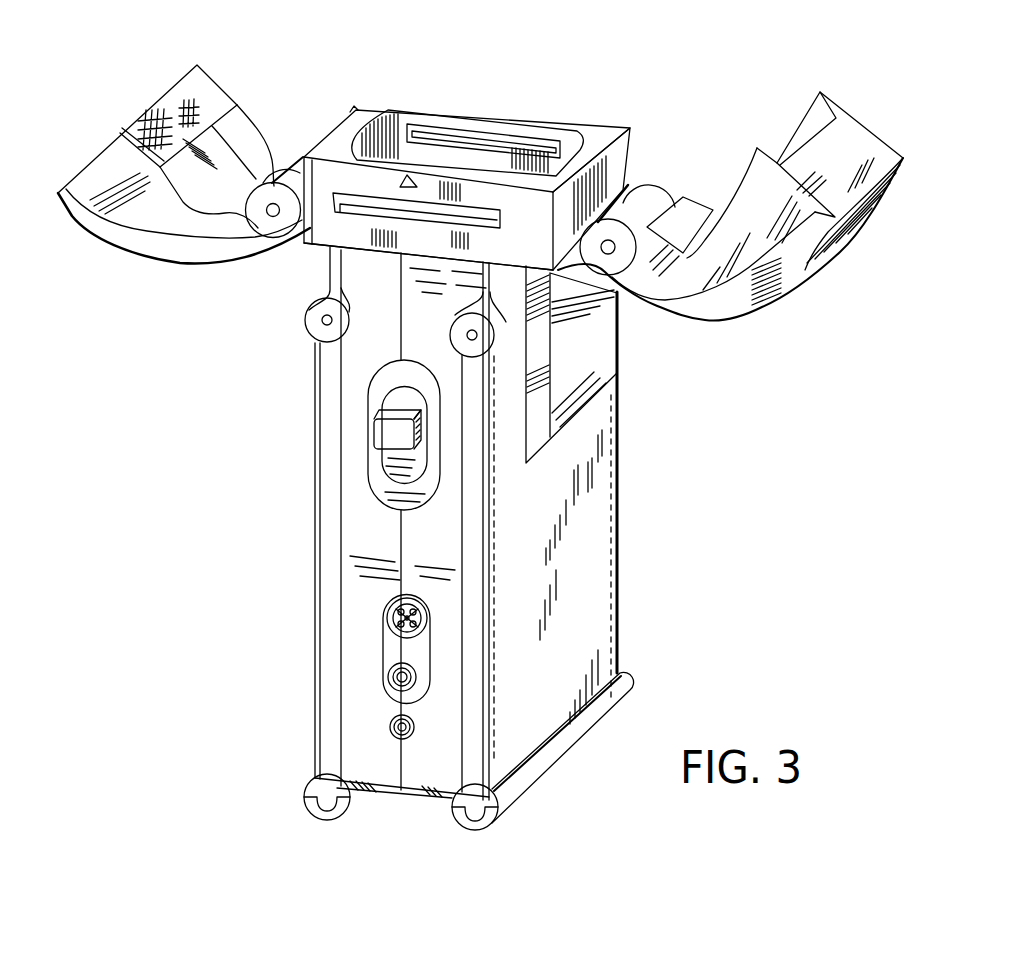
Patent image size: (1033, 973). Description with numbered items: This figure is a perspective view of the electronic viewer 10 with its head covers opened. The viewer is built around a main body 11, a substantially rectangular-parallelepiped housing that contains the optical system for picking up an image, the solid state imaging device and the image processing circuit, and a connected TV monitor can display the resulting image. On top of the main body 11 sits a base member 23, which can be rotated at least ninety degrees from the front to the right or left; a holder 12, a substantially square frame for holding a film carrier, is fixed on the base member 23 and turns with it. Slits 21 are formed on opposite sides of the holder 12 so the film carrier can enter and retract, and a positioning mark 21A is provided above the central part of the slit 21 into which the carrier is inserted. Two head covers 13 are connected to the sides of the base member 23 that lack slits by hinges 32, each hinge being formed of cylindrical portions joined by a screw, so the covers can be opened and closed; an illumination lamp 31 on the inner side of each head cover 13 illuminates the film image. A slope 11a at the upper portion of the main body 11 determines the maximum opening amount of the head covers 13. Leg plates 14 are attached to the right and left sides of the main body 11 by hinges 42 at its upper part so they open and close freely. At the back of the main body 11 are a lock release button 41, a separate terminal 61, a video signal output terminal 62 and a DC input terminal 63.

The electronic viewer 10 is at (629, 89).
The main body 11 is at (363, 538).
The slope 11a is at (392, 252).
The holder 12 is at (545, 200).
The head cover 13 is at (237, 157).
The leg plate 14 is at (330, 596).
The slit 21 is at (500, 150).
The positioning mark 21A is at (407, 177).
The base member 23 is at (306, 241).
The illumination lamp 31 is at (148, 120).
The hinge 32 is at (288, 160).
The lock release button 41 is at (382, 430).
The hinge 42 is at (327, 322).
The separate terminal 61 is at (385, 624).
The video signal output terminal 62 is at (390, 680).
The DC input terminal 63 is at (388, 730).